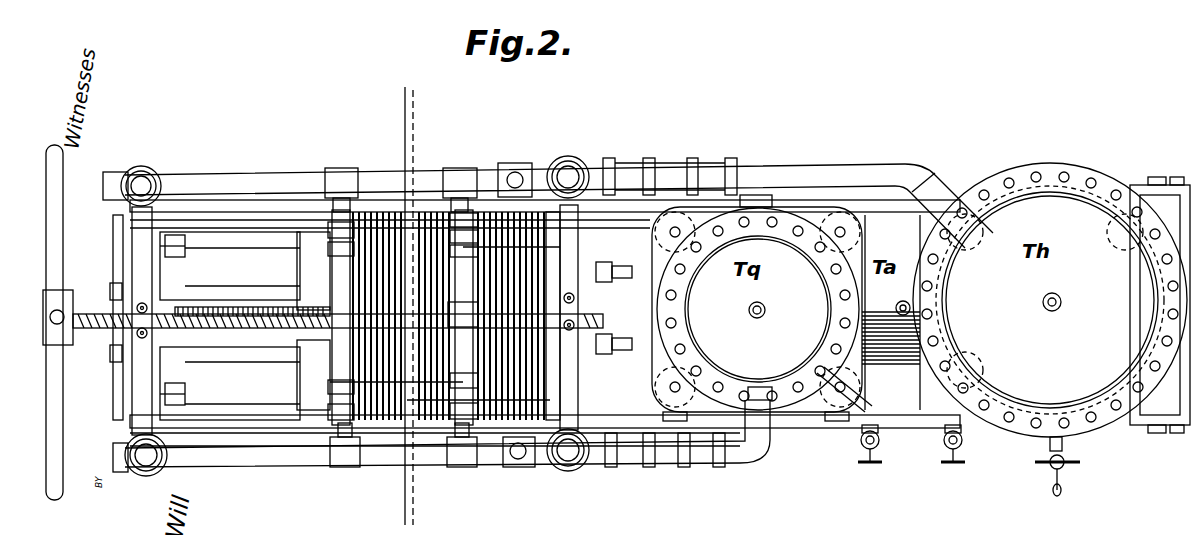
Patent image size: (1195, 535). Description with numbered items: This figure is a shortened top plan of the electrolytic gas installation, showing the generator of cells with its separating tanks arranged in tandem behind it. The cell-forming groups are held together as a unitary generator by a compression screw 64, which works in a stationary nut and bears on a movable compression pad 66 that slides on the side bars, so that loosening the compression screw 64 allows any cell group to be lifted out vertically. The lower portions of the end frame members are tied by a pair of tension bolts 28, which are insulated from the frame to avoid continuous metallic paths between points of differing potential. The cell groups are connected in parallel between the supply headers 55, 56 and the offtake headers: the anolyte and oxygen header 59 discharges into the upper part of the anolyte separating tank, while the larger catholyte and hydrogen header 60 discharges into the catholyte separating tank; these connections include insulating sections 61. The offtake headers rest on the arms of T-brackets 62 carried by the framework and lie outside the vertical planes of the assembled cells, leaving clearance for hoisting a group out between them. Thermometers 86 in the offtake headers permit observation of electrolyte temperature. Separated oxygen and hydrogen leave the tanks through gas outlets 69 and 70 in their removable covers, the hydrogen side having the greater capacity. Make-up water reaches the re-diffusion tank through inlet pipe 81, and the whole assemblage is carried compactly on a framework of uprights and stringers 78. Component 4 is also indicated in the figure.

The cooling unit frame column 4 is at (483, 150).
The tension bolts 28 is at (200, 210).
The supply header 55 is at (208, 408).
The supply header 56 is at (197, 292).
The anolyte and oxygen offtake header 59 is at (284, 457).
The catholyte and hydrogen offtake header 60 is at (278, 185).
The insulating sections 61 is at (668, 170).
The T-brackets 62 is at (138, 258).
The compression screw 64 is at (95, 330).
The compression pad 66 is at (303, 264).
The gas outlet 69 is at (776, 303).
The gas outlet 70 is at (1050, 312).
The stringers 78 is at (929, 410).
The inlet pipe 81 is at (898, 306).
The thermometers 86 is at (516, 172).